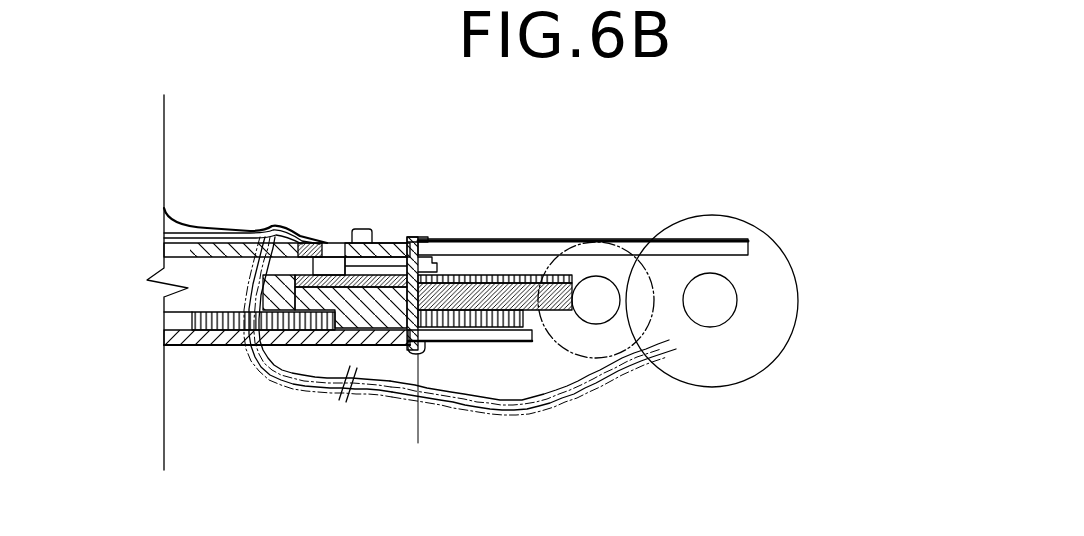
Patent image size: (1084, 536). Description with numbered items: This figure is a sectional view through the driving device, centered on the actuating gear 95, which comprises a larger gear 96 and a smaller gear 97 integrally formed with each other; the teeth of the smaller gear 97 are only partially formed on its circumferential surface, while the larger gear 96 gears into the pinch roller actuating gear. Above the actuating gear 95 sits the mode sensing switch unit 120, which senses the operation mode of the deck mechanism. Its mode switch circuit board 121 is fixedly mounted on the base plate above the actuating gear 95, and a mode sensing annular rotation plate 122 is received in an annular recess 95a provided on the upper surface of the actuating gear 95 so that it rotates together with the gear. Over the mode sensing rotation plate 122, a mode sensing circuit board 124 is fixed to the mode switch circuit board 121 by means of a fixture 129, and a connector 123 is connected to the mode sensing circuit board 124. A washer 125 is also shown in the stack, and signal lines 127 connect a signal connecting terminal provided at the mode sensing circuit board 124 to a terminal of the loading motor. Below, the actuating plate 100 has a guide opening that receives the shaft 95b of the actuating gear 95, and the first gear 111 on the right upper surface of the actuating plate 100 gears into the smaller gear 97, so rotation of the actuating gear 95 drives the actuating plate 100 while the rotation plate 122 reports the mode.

The actuating gear 95 is at (580, 268).
The annular recess 95a is at (265, 292).
The shaft 95b is at (388, 342).
The larger gear 96 is at (518, 272).
The smaller gear 97 is at (472, 240).
The actuating plate 100 is at (505, 341).
The first gear 111 is at (233, 343).
The mode sensing switch unit 120 is at (188, 352).
The mode switch circuit board 121 is at (217, 248).
The mode sensing annular rotation plate 122 is at (317, 343).
The connector 123 is at (327, 243).
The mode sensing circuit board 124 is at (392, 240).
The washer 125 is at (380, 343).
The signal lines 127 is at (607, 397).
The fixture 129 is at (338, 256).